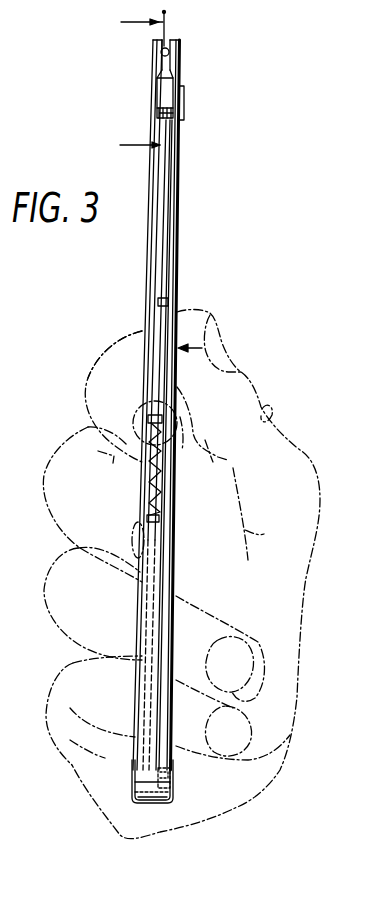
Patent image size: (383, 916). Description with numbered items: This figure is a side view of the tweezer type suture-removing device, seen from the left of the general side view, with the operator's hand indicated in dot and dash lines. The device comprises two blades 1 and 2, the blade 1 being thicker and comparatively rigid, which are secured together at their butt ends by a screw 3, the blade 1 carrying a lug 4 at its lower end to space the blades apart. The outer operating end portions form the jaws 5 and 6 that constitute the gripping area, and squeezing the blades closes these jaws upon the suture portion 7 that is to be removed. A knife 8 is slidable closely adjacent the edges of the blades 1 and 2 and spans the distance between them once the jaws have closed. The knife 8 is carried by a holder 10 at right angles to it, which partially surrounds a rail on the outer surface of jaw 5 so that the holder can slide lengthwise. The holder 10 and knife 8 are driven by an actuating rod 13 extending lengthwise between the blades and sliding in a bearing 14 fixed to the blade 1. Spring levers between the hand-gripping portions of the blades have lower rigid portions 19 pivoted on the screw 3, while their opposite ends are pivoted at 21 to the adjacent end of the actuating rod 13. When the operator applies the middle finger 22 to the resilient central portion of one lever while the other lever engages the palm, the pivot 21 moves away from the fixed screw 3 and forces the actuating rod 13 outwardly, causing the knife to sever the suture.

The blade 1 is at (171, 213).
The blade 2 is at (148, 240).
The screw 3 is at (136, 776).
The lug 4 is at (147, 800).
The jaw 5 is at (173, 62).
The jaw 6 is at (157, 60).
The suture portion 7 is at (167, 44).
The knife 8 is at (157, 78).
The holder 10 is at (184, 98).
The actuating rod 13 is at (163, 179).
The bearing 14 is at (158, 302).
The rigid portion 19 is at (160, 758).
The pivot 21 is at (133, 521).
The middle finger 22 is at (86, 392).